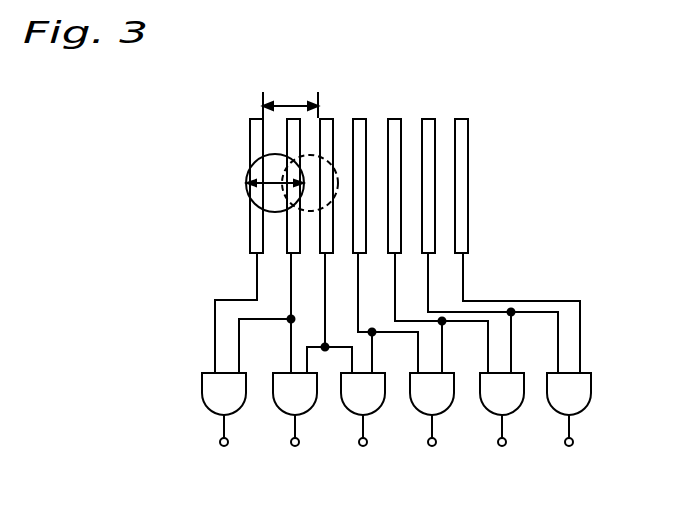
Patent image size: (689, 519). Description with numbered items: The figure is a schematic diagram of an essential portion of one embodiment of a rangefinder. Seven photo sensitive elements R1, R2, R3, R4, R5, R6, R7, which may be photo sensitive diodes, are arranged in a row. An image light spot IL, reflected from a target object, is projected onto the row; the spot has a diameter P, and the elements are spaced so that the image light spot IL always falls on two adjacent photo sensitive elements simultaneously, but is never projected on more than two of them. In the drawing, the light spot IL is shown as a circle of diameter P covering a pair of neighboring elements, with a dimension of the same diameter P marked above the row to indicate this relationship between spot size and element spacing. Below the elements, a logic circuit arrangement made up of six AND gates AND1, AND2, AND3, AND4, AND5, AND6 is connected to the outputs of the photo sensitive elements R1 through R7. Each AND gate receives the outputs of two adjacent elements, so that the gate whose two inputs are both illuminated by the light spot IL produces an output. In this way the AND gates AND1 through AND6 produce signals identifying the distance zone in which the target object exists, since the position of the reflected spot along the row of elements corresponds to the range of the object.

The photo sensitive element R1 is at (250, 148).
The photo sensitive element R2 is at (286, 220).
The photo sensitive element R3 is at (319, 233).
The photo sensitive element R4 is at (363, 153).
The photo sensitive element R5 is at (396, 194).
The photo sensitive element R6 is at (430, 224).
The photo sensitive element R7 is at (464, 247).
The image light spot IL is at (270, 191).
The diameter of image light spot P is at (227, 197).
The AND gate AND1 is at (208, 407).
The AND gate AND2 is at (279, 404).
The AND gate AND3 is at (348, 403).
The AND gate AND4 is at (418, 405).
The AND gate AND5 is at (490, 405).
The AND gate AND6 is at (558, 406).